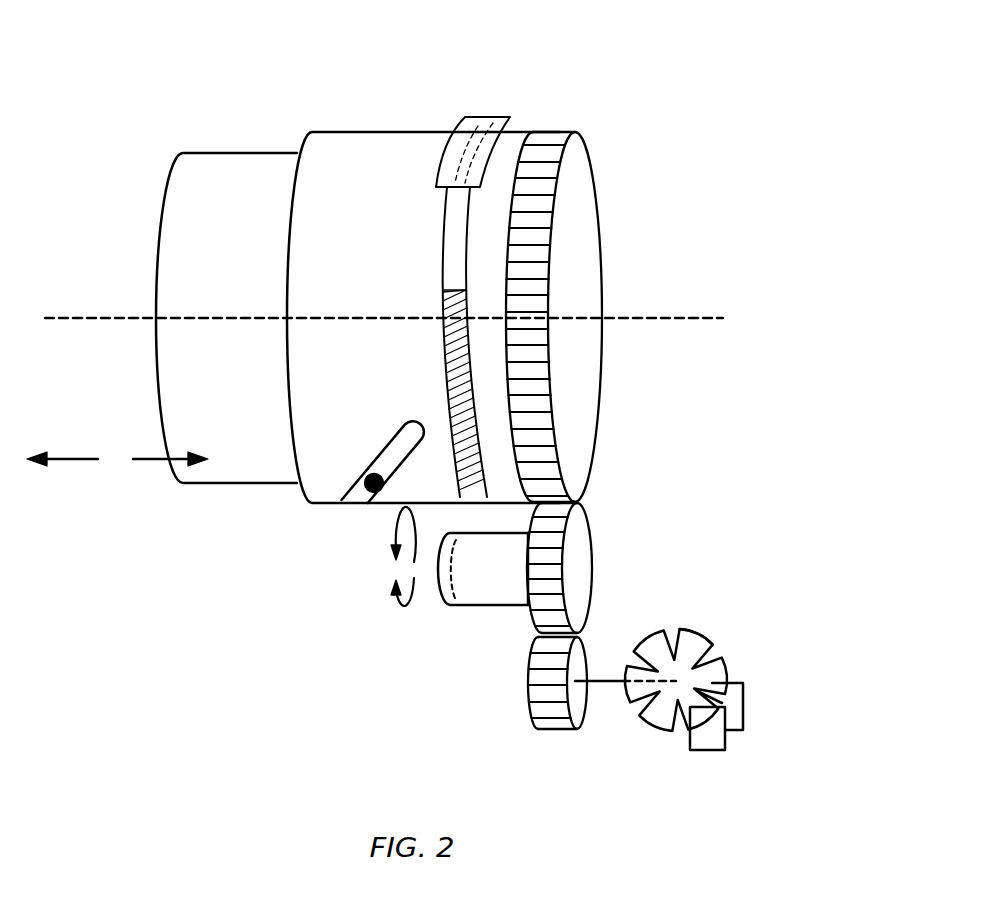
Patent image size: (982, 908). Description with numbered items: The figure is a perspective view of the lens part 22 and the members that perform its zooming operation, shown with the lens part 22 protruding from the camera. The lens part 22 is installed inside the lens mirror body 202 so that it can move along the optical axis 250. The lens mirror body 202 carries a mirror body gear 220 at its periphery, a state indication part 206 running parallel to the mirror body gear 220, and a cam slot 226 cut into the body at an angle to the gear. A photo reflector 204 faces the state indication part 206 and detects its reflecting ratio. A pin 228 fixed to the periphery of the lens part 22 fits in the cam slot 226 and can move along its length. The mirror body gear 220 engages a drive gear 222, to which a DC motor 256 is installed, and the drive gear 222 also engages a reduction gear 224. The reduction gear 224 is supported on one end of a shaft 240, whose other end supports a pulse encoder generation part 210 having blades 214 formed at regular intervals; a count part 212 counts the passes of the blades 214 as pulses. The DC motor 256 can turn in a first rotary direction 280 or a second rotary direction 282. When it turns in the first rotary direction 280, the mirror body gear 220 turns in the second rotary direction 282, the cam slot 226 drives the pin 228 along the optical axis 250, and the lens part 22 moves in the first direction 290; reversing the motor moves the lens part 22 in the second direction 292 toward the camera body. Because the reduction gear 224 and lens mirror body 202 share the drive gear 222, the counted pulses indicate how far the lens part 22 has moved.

The lens part 22 is at (213, 153).
The lens mirror body 202 is at (368, 132).
The photo reflector 204 is at (492, 117).
The state indication part 206 is at (446, 240).
The mirror body gear 220 is at (588, 142).
The drive gear 222 is at (592, 541).
The reduction gear 224 is at (588, 656).
The DC motor 256 is at (465, 608).
The shaft 240 is at (595, 700).
The pulse encoder generation part 210 is at (692, 635).
The blades 214 is at (706, 646).
The count part 212 is at (742, 745).
The cam slot 226 is at (390, 447).
The pin 228 is at (366, 479).
The optical axis 250 is at (702, 318).
The first direction 290 is at (76, 461).
The second direction 292 is at (136, 458).
The first rotary direction 280 is at (398, 540).
The second rotary direction 282 is at (398, 601).